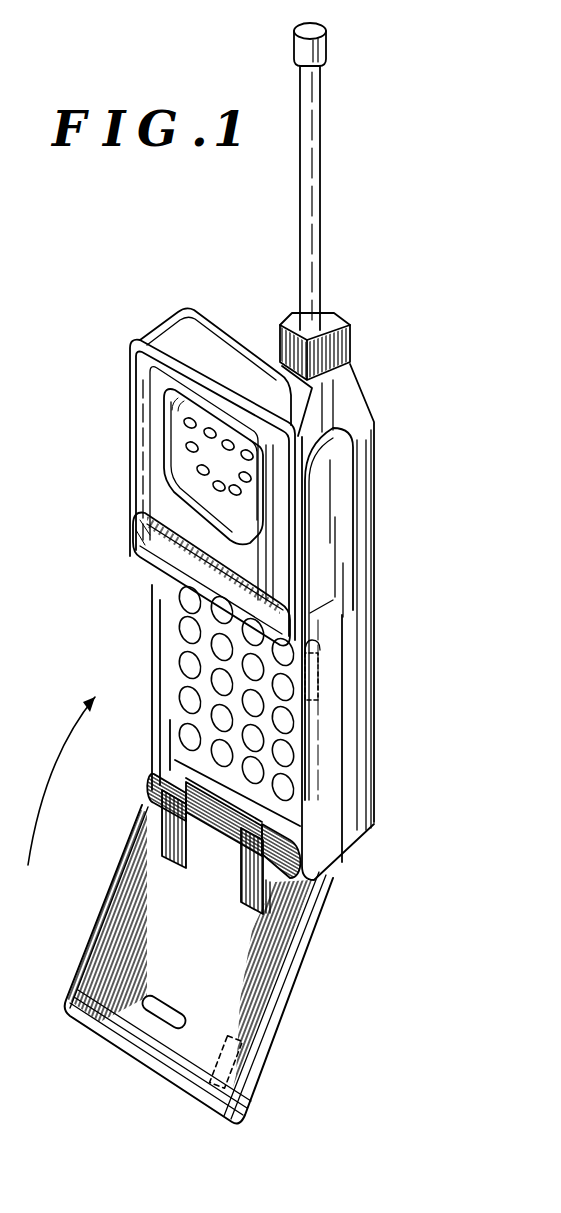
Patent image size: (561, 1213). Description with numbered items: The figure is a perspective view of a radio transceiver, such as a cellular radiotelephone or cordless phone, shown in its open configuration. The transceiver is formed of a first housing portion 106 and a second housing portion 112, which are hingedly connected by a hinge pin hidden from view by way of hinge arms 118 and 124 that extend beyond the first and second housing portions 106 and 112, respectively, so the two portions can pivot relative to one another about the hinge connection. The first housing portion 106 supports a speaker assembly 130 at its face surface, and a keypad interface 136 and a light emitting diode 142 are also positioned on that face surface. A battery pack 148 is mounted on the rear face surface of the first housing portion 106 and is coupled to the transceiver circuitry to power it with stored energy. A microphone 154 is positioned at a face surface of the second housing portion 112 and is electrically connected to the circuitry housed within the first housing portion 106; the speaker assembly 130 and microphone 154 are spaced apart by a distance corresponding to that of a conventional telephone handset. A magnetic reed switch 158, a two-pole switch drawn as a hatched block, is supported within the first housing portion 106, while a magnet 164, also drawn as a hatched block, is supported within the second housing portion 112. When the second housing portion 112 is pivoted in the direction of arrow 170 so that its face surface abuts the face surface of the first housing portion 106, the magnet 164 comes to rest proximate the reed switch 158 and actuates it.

The first housing portion 106 is at (135, 388).
The second housing portion 112 is at (135, 893).
The hinge arm 118 is at (150, 784).
The hinge arm 124 is at (172, 830).
The speaker assembly 130 is at (172, 487).
The keypad interface 136 is at (181, 684).
The light emitting diode 142 is at (136, 548).
The battery pack 148 is at (358, 407).
The microphone 154 is at (148, 1002).
The magnetic reed switch 158 is at (318, 678).
The magnet 164 is at (248, 1092).
The arrow 170 is at (58, 778).